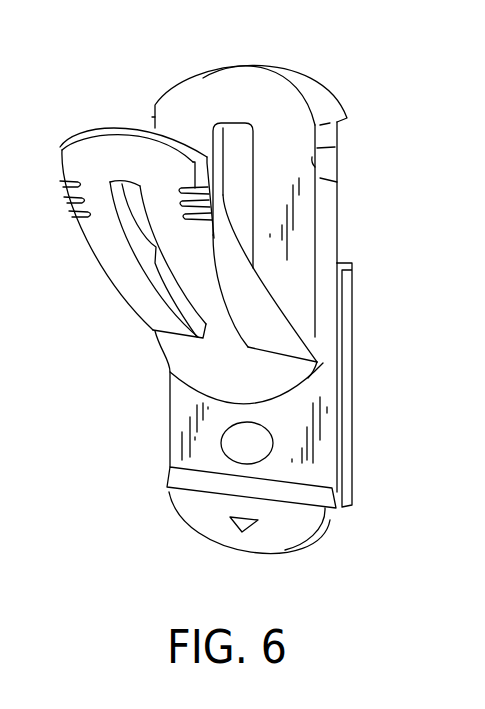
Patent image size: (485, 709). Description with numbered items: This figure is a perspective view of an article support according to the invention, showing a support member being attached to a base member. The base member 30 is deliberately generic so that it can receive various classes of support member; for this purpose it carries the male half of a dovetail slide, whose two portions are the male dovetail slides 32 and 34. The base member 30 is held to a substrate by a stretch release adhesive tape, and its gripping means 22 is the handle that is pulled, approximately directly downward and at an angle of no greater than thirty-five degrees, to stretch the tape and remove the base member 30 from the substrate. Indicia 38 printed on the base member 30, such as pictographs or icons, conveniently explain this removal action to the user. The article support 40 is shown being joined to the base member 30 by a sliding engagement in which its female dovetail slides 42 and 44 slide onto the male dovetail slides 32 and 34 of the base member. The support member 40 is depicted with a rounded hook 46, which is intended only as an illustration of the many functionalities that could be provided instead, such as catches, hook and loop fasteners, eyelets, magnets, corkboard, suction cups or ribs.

The gripping means 22 is at (283, 532).
The base member 30 is at (178, 428).
The male dovetail slide 32 is at (345, 403).
The male dovetail slide 34 is at (170, 410).
The indicia 38 is at (273, 443).
The article support 40 is at (278, 112).
The female dovetail slide 42 is at (337, 182).
The female dovetail slide 44 is at (152, 119).
The rounded hook 46 is at (85, 158).